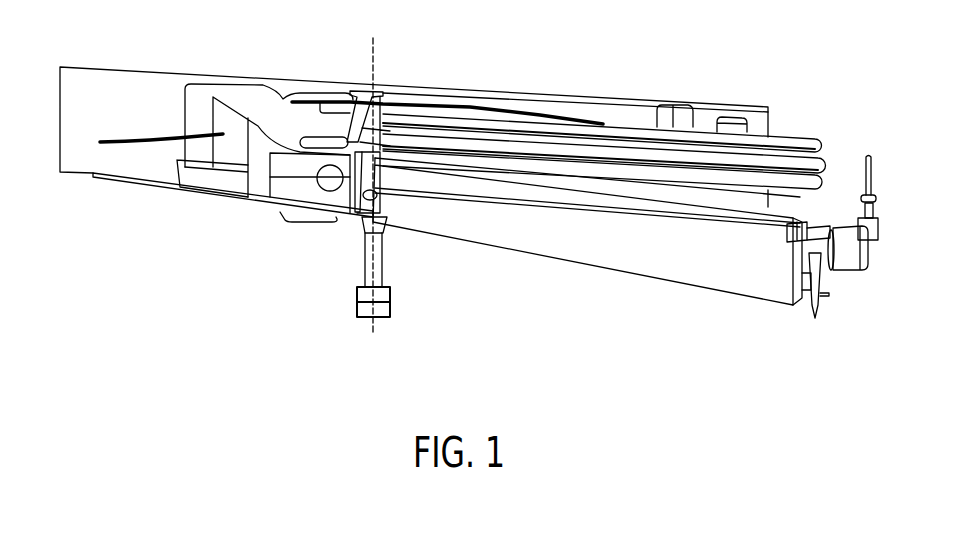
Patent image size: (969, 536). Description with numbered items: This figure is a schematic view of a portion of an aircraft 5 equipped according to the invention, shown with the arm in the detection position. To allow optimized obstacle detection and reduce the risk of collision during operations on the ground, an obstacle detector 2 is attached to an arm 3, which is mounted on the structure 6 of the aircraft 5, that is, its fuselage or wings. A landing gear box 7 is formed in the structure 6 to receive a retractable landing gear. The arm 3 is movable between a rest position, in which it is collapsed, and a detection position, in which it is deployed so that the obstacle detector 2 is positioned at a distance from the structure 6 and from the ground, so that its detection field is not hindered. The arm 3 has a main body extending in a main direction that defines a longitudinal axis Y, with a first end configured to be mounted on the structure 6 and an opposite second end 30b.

The aircraft 5 is at (149, 86).
The longitudinal axis of the arm Y is at (393, 62).
The structure of the aircraft 6 is at (165, 201).
The landing gear box 7 is at (433, 214).
The arm 3 is at (347, 261).
The second end 30b is at (405, 279).
The obstacle detector 2 is at (340, 313).